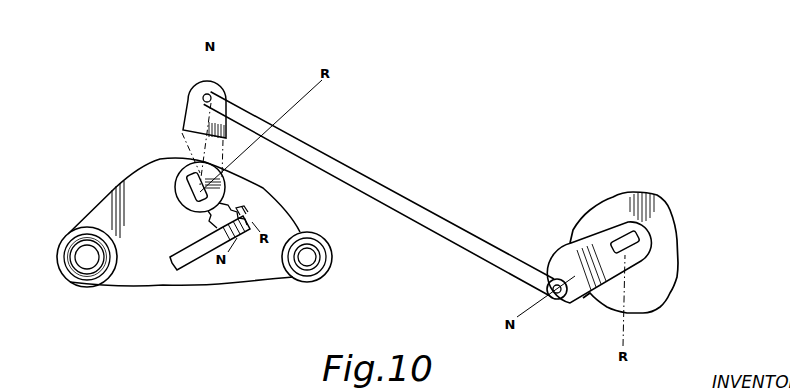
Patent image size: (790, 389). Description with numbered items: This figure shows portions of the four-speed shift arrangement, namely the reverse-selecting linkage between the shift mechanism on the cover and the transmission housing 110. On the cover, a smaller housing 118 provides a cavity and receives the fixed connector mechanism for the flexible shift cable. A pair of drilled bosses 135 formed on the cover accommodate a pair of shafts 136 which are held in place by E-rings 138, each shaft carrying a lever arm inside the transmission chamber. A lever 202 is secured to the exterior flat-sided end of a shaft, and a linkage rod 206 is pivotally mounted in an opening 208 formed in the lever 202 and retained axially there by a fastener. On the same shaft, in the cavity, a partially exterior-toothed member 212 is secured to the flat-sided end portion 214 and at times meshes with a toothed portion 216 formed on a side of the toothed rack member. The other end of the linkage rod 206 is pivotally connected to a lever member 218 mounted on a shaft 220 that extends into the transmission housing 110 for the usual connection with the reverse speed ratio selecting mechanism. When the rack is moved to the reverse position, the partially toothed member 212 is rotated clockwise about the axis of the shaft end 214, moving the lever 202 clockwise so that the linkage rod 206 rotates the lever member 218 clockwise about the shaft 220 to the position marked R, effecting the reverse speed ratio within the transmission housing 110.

The transmission housing 110 is at (678, 276).
The smaller housing 118 is at (192, 273).
The drilled bosses 135 is at (110, 267).
The shafts 136 is at (87, 262).
The E-rings 138 is at (77, 240).
The lever 202 is at (192, 118).
The linkage rod 206 is at (374, 190).
The opening 208 is at (208, 96).
The partially exterior-toothed member 212 is at (187, 193).
The flat-sided end portion 214 is at (196, 177).
The toothed portion 216 is at (243, 242).
The lever member 218 is at (600, 246).
The shaft 220 is at (640, 233).